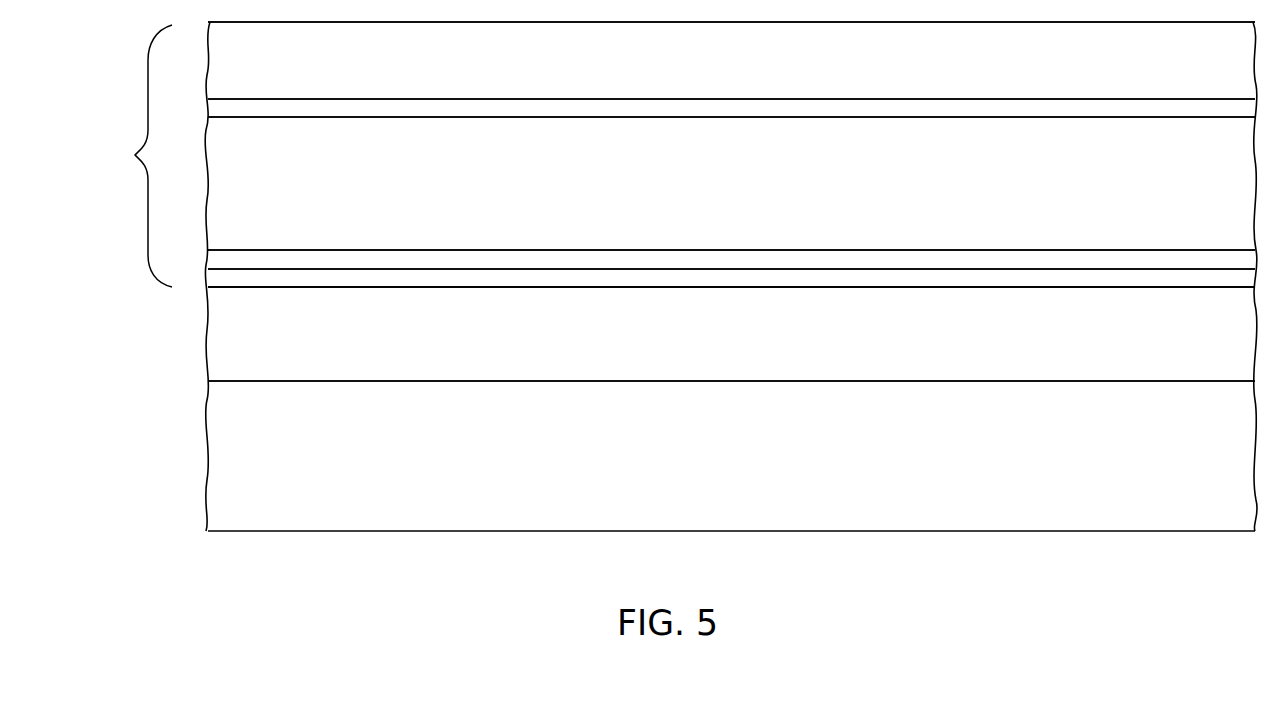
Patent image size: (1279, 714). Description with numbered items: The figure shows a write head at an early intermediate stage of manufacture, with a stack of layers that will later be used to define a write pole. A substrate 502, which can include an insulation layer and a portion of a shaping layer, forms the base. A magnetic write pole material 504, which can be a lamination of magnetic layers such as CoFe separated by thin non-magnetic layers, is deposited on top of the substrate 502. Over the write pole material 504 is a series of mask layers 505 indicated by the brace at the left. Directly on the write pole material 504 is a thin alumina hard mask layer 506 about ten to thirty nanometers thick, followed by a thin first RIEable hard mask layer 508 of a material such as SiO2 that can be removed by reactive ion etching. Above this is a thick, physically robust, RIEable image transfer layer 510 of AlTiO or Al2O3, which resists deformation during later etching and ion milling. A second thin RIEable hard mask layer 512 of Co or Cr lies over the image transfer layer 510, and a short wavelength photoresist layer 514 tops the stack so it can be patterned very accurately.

The substrate 502 is at (741, 447).
The magnetic write pole material 504 is at (740, 340).
The series of mask layers 505 is at (150, 43).
The alumina hard mask layer 506 is at (1112, 275).
The first RIEable hard mask layer 508 is at (1115, 260).
The RIEable image transfer layer 510 is at (740, 189).
The second RIEable hard mask layer 512 is at (1105, 108).
The photoresist layer 514 is at (740, 63).